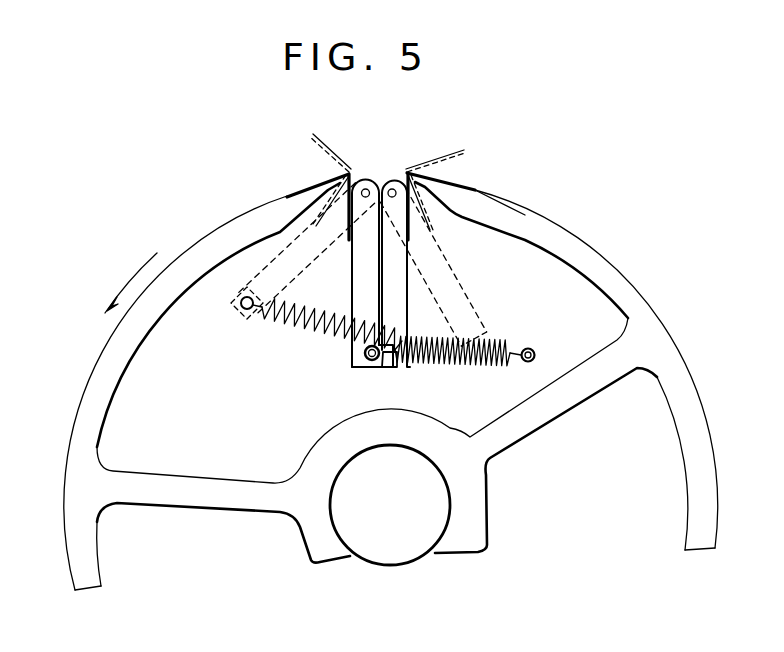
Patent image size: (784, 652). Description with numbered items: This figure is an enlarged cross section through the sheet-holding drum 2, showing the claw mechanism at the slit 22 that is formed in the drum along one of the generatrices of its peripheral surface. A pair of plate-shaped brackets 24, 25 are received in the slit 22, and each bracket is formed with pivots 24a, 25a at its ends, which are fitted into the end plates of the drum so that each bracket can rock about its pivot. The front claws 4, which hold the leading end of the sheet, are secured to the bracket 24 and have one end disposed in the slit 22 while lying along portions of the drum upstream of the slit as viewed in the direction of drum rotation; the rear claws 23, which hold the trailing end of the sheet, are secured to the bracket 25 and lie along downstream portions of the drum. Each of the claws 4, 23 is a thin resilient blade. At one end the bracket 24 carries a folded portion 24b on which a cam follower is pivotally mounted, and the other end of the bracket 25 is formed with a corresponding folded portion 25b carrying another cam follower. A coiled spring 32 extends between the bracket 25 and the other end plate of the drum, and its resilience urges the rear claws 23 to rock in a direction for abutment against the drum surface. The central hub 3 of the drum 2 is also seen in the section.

The drum 2 is at (217, 231).
The hub shaft 3 is at (446, 505).
The front claws 4 is at (457, 181).
The slit 22 is at (385, 158).
The rear claws 23 is at (322, 180).
The bracket 24 is at (400, 272).
The pivot 24a is at (393, 187).
The folded portion 24b is at (390, 368).
The bracket 25 is at (353, 275).
The pivot 25a is at (363, 187).
The folded portion 25b is at (363, 368).
The coiled spring 32 is at (453, 367).